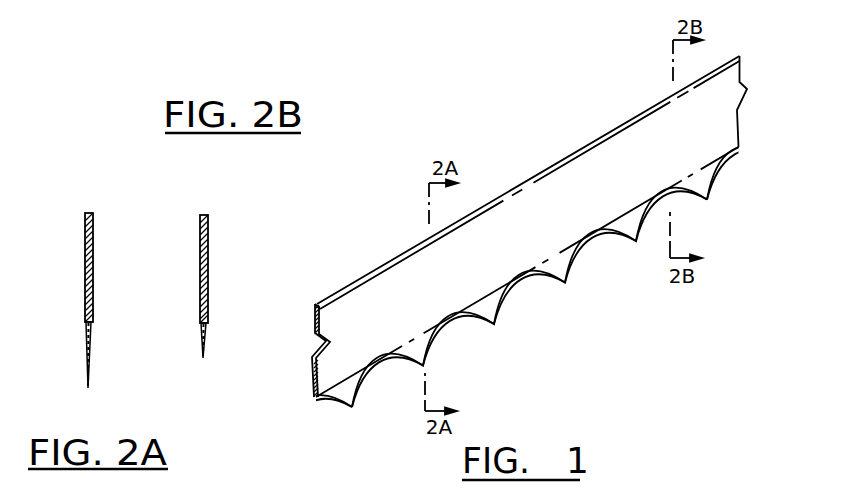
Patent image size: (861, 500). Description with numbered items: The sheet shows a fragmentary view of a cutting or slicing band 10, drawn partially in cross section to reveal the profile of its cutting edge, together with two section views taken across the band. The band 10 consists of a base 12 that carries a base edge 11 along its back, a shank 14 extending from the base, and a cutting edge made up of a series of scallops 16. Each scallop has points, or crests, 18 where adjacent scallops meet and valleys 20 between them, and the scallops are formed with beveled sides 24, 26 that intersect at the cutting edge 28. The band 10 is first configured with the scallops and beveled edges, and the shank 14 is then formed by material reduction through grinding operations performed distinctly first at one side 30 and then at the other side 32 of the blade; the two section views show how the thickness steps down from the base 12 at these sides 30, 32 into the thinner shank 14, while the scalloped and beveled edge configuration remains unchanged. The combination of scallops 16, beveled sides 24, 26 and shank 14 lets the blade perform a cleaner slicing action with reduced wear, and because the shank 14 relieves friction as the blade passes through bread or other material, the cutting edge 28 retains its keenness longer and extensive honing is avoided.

In FIG. 1, the band 10 is at (503, 189).
In FIG. 2A, the band 10 is at (82, 223).
In FIG. 2B, the band 10 is at (198, 225).
In FIG. 1, the base edge 11 is at (405, 252).
In FIG. 2A, the base edge 11 is at (88, 213).
In FIG. 2B, the base edge 11 is at (205, 215).
In FIG. 1, the base 12 is at (600, 170).
In FIG. 2A, the base 12 is at (85, 267).
In FIG. 2B, the base 12 is at (200, 265).
In FIG. 1, the shank 14 is at (317, 405).
In FIG. 2A, the shank 14 is at (85, 355).
In FIG. 2B, the shank 14 is at (203, 333).
In FIG. 1, the scallops 16 is at (518, 290).
In FIG. 1, the points or crests 18 is at (568, 283).
In FIG. 1, the valleys 20 is at (525, 288).
In FIG. 2A, the beveled side 24 is at (88, 378).
In FIG. 2B, the beveled side 24 is at (200, 343).
In FIG. 1, the beveled side 26 is at (382, 367).
In FIG. 2A, the beveled side 26 is at (88, 378).
In FIG. 2B, the beveled side 26 is at (203, 343).
In FIG. 1, the cutting edge 28 is at (457, 327).
In FIG. 2A, the cutting edge 28 is at (87, 390).
In FIG. 2B, the cutting edge 28 is at (202, 358).
In FIG. 1, the one side 30 is at (700, 168).
In FIG. 2A, the one side 30 is at (92, 322).
In FIG. 2B, the one side 30 is at (205, 327).
In FIG. 2A, the other side 32 is at (85, 322).
In FIG. 2B, the other side 32 is at (200, 327).